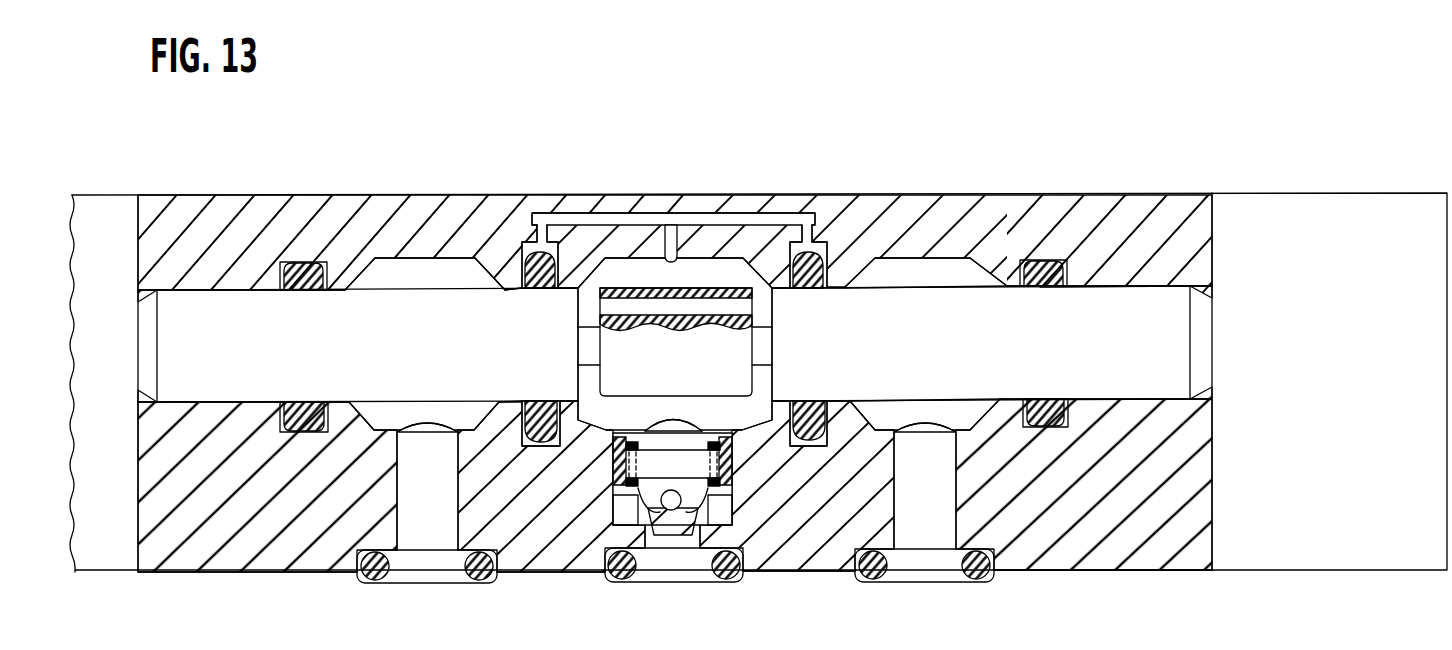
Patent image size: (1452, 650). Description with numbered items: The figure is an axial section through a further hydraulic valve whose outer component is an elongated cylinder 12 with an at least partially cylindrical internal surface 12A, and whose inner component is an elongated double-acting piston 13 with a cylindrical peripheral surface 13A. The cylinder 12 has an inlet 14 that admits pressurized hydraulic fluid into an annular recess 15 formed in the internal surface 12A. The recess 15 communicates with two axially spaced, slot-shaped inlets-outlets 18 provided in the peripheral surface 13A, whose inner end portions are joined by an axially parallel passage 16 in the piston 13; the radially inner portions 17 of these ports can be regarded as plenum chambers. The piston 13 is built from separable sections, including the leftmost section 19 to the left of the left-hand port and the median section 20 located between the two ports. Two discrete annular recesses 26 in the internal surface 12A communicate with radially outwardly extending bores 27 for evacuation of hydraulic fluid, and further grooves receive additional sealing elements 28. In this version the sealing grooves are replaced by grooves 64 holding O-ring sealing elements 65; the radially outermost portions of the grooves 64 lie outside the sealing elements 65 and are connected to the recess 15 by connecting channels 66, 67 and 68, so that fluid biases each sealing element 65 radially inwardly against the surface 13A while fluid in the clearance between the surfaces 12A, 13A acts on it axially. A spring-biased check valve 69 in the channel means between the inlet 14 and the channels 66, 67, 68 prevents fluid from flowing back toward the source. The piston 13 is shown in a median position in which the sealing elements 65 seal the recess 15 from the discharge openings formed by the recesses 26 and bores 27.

The outer component 12 is at (907, 225).
The internal surface 12A is at (193, 291).
The inner component 13 is at (1217, 331).
The external surface 13A is at (1112, 287).
The inlet 14 is at (664, 545).
The annular recess 15 is at (623, 273).
The passage 16 is at (651, 309).
The radially inner portion 17 is at (586, 377).
The inlet-outlet 18 is at (585, 290).
The leftmost section 19 is at (214, 367).
The median section 20 is at (699, 370).
The annular recess 26 is at (395, 260).
The bore 27 is at (430, 517).
The additional sealing element 28 is at (292, 262).
The groove 64 is at (522, 248).
The sealing element 65 is at (524, 255).
The connecting channel 66 is at (548, 235).
The connecting channel 67 is at (652, 212).
The connecting channel 68 is at (677, 214).
The spring-biased check valve 69 is at (690, 538).